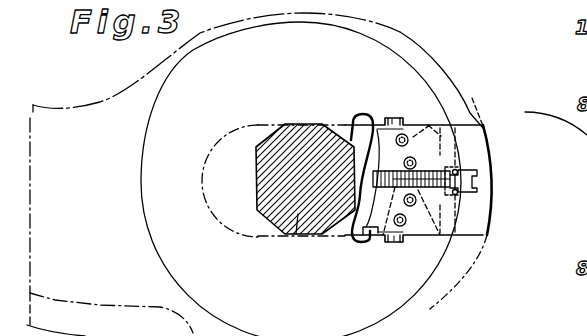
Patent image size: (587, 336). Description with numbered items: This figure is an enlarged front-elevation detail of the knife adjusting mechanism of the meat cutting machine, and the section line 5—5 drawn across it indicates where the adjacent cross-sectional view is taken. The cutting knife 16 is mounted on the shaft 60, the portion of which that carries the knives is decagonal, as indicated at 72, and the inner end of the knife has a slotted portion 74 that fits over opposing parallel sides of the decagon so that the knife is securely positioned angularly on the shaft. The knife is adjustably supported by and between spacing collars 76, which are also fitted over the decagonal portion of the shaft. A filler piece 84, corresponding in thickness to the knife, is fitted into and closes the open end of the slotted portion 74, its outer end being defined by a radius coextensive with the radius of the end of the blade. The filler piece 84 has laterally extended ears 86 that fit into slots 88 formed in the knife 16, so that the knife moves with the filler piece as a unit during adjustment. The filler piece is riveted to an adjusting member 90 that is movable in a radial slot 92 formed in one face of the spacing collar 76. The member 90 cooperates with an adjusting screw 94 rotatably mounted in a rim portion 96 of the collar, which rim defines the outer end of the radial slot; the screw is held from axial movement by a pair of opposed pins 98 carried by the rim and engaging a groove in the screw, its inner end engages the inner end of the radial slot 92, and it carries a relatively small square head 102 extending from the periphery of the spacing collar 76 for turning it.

The section line 5— 5 is at (187, 175).
The cutting knife 16 is at (447, 66).
The shaft 60 is at (296, 234).
The decagonal portion 72 is at (255, 188).
The slotted portion 74 is at (346, 122).
The spacing collar 76 is at (405, 50).
The filler piece 84 is at (483, 140).
The laterally extended ears 86 is at (392, 122).
The slots 88 is at (390, 117).
The adjusting member 90 is at (438, 125).
The radial slot 92 is at (472, 98).
The adjusting screw 94 is at (467, 248).
The rim portion 96 is at (465, 160).
The opposed pins 98 is at (476, 112).
The square head 102 is at (460, 193).